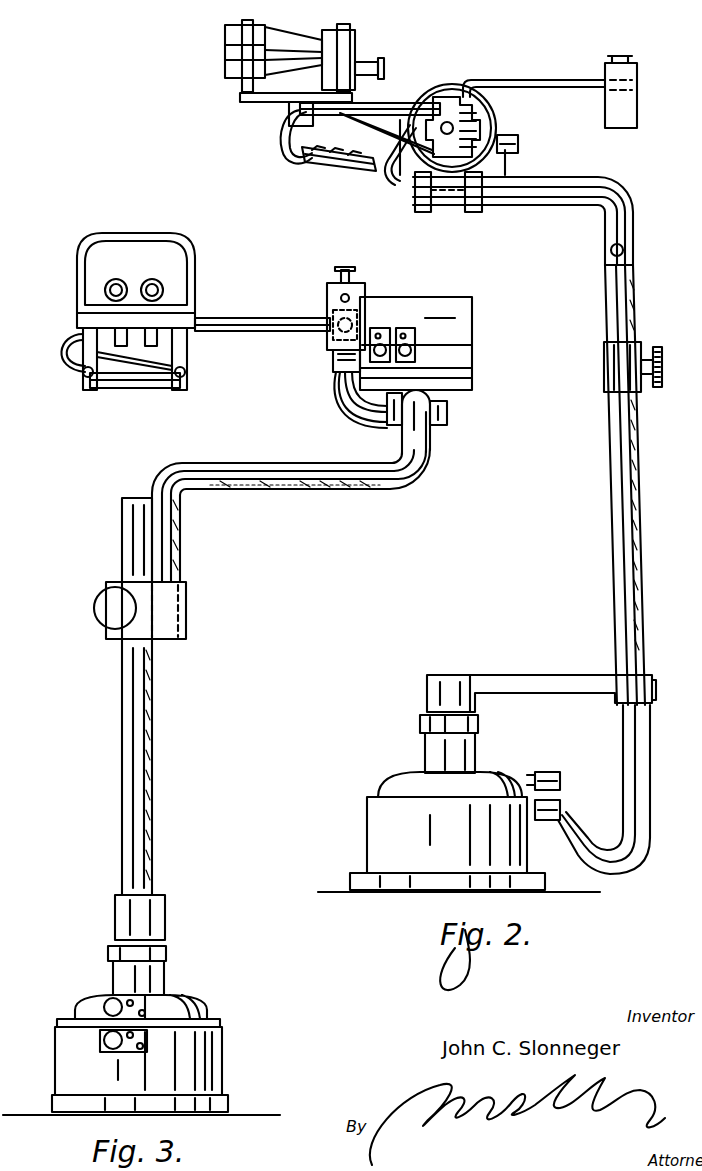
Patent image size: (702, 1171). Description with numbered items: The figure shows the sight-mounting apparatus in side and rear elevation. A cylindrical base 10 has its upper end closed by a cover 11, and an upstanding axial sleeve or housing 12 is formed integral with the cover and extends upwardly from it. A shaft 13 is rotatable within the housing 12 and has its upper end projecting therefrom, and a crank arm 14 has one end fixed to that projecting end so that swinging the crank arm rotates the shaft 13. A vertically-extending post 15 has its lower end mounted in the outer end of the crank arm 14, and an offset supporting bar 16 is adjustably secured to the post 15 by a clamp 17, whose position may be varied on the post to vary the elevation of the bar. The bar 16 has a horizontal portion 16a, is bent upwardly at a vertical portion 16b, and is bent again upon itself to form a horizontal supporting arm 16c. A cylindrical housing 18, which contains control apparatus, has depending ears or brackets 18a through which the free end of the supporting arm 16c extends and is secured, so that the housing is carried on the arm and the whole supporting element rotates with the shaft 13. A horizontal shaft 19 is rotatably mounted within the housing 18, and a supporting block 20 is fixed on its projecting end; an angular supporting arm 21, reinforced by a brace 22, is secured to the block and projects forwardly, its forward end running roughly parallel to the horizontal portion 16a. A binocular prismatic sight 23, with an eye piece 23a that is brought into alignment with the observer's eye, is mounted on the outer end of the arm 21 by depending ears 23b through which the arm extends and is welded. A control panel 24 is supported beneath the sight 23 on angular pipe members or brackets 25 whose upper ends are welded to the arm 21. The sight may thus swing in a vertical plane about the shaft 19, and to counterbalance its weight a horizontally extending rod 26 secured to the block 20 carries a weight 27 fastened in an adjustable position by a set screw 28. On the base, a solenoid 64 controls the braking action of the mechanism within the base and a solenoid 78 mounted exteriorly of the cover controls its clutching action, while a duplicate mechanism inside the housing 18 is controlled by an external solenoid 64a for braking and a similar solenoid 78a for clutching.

In FIG. 2, the base 10 is at (370, 838).
In FIG. 3, the base 10 is at (222, 1050).
In FIG. 2, the cover 11 is at (390, 785).
In FIG. 3, the cover 11 is at (195, 1000).
In FIG. 2, the sleeve or housing 12 is at (430, 750).
In FIG. 3, the sleeve or housing 12 is at (167, 975).
In FIG. 2, the shaft 13 is at (427, 705).
In FIG. 2, the crank arm 14 is at (525, 675).
In FIG. 2, the post 15 is at (608, 540).
In FIG. 3, the post 15 is at (152, 752).
In FIG. 2, the offset supporting bar 16 is at (555, 205).
In FIG. 3, the offset supporting bar 16 is at (240, 463).
In FIG. 3, the horizontal portion 16a is at (328, 490).
In FIG. 2, the vertical portion 16b is at (635, 224).
In FIG. 3, the vertical portion 16b is at (432, 444).
In FIG. 2, the horizontal supporting arm 16c is at (558, 180).
In FIG. 2, the clamp 17 is at (604, 388).
In FIG. 3, the clamp 17 is at (186, 606).
In FIG. 2, the housing or casing 18 is at (465, 85).
In FIG. 3, the housing or casing 18 is at (445, 312).
In FIG. 2, the depending ears or brackets 18a is at (416, 212).
In FIG. 3, the depending ears or brackets 18a is at (447, 412).
In FIG. 2, the horizontal shaft 19 is at (472, 112).
In FIG. 2, the supporting block 20 is at (452, 88).
In FIG. 2, the angular supporting arm 21 is at (410, 105).
In FIG. 3, the angular supporting arm 21 is at (240, 320).
In FIG. 2, the brace 22 is at (374, 172).
In FIG. 2, the binocular prismatic sight 23 is at (225, 50).
In FIG. 3, the binocular prismatic sight 23 is at (78, 265).
In FIG. 2, the eye piece 23a is at (380, 62).
In FIG. 3, the eye piece 23a is at (114, 280).
In FIG. 2, the depending ears 23b is at (289, 118).
In FIG. 3, the depending ears 23b is at (187, 352).
In FIG. 3, the control panel 24 is at (128, 390).
In FIG. 2, the angular pipe members or brackets 25 is at (312, 162).
In FIG. 3, the angular pipe members or brackets 25 is at (55, 350).
In FIG. 2, the horizontally extending rod 26 is at (520, 80).
In FIG. 2, the weight 27 is at (637, 98).
In FIG. 2, the set screw 28 is at (632, 56).
In FIG. 2, the electrical solenoid 64 is at (560, 810).
In FIG. 3, the electrical solenoid 64 is at (108, 1047).
In FIG. 3, the external solenoid 64a is at (415, 350).
In FIG. 2, the solenoid 78 is at (548, 772).
In FIG. 3, the solenoid 78 is at (103, 1005).
In FIG. 2, the solenoid 78a is at (518, 142).
In FIG. 3, the solenoid 78a is at (382, 330).